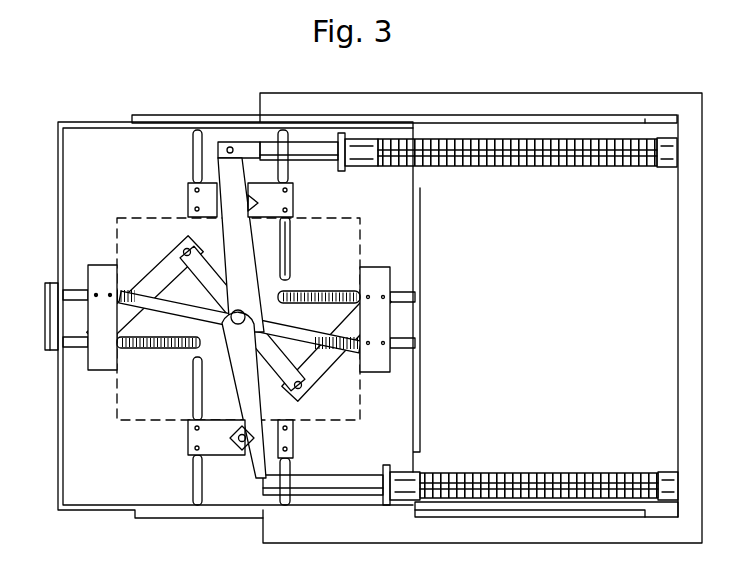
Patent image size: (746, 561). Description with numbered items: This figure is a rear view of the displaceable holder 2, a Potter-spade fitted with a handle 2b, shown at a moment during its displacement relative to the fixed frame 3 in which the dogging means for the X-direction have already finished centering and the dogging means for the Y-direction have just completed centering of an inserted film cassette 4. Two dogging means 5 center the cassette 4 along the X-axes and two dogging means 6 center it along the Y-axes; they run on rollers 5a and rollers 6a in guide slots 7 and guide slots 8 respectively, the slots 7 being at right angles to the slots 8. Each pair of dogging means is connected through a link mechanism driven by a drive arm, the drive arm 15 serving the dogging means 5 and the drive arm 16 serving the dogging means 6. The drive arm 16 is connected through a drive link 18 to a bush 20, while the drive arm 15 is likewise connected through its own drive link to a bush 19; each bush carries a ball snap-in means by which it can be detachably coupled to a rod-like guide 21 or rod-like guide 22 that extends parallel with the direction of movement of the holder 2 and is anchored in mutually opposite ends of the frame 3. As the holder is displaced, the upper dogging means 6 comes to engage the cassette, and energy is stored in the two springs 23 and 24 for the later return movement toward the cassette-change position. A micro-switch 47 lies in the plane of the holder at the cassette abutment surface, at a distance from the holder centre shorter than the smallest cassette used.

The holder 2 is at (91, 121).
The handle 2b is at (52, 352).
The frame 3 is at (639, 90).
The film cassette 4 is at (117, 226).
The dogging means 5 is at (95, 272).
The rollers 5a is at (125, 288).
The dogging means 6 is at (189, 197).
The rollers 6a is at (193, 176).
The guide slots 7 is at (305, 290).
The guide slots 8 is at (291, 262).
The drive arm 15 is at (260, 378).
The drive arm 16 is at (244, 245).
The drive link 18 is at (245, 146).
The bush 19 is at (418, 484).
The bush 20 is at (356, 150).
The rod-like guide 21 is at (478, 488).
The rod-like guide 22 is at (484, 161).
The spring 23 is at (532, 488).
The spring 24 is at (588, 167).
The micro-switch 47 is at (205, 322).